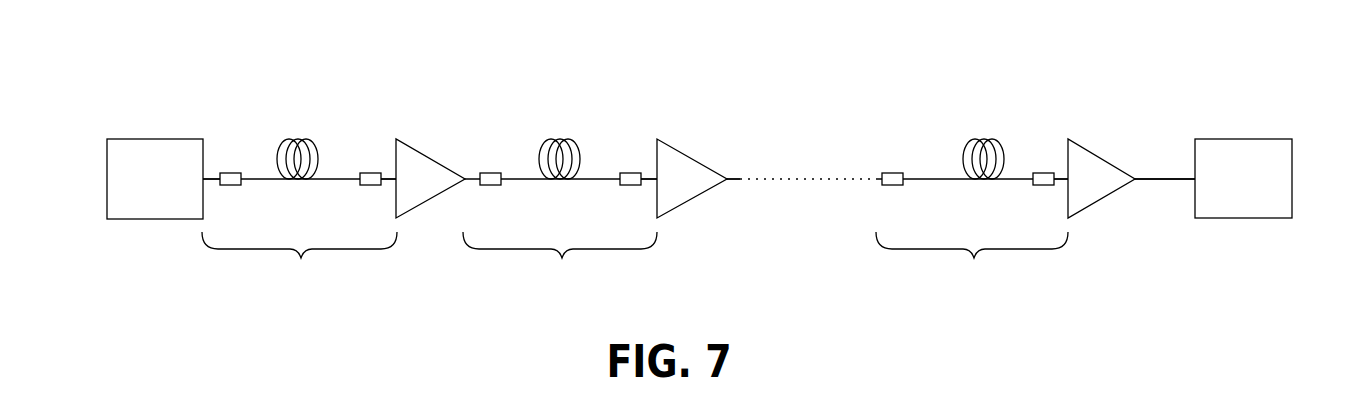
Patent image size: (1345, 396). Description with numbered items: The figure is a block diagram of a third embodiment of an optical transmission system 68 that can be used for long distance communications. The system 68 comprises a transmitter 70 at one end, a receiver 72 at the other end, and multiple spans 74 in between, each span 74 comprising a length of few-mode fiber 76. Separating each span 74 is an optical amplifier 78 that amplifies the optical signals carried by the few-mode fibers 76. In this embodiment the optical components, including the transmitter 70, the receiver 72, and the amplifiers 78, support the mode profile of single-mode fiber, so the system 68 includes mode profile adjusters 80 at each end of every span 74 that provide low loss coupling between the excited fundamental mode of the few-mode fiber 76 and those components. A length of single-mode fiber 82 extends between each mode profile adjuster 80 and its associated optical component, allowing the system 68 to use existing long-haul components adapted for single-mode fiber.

The optical transmission system 68 is at (1295, 56).
The transmitter 70 is at (143, 190).
The receiver 72 is at (1231, 190).
The span 74 is at (635, 258).
The few-mode fiber 76 is at (298, 139).
The optical amplifier 78 is at (409, 190).
The mode profile adjuster 80 is at (228, 173).
The single-mode fiber 82 is at (212, 177).